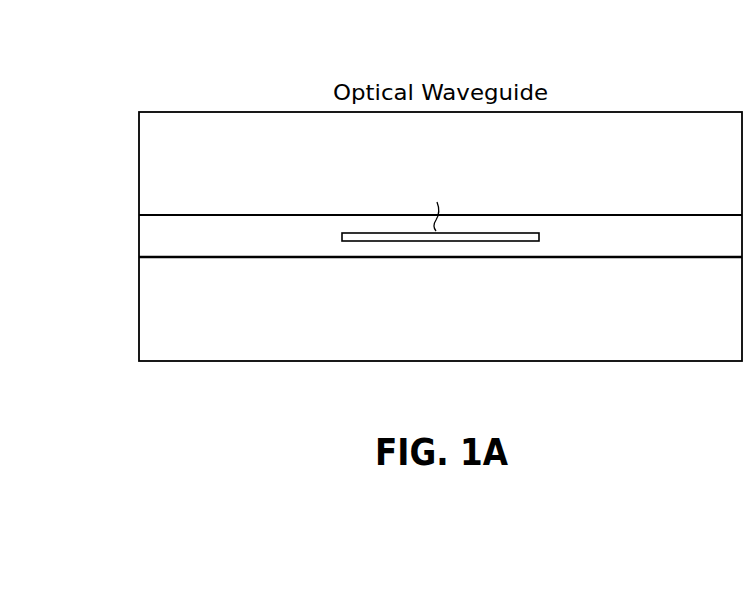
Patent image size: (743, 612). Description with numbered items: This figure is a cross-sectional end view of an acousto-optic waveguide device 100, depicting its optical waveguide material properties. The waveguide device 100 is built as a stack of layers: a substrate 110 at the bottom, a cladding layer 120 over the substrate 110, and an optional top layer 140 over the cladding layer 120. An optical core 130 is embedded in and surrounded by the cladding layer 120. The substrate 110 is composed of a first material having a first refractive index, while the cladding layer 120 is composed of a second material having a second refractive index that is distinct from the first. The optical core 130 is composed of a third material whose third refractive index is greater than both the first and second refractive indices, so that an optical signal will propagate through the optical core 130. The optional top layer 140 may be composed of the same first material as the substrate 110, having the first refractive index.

The acousto-optic waveguide device 100 is at (159, 88).
The substrate 110 is at (157, 293).
The cladding layer 120 is at (157, 240).
The optical core 130 is at (507, 243).
The top layer 140 is at (157, 178).